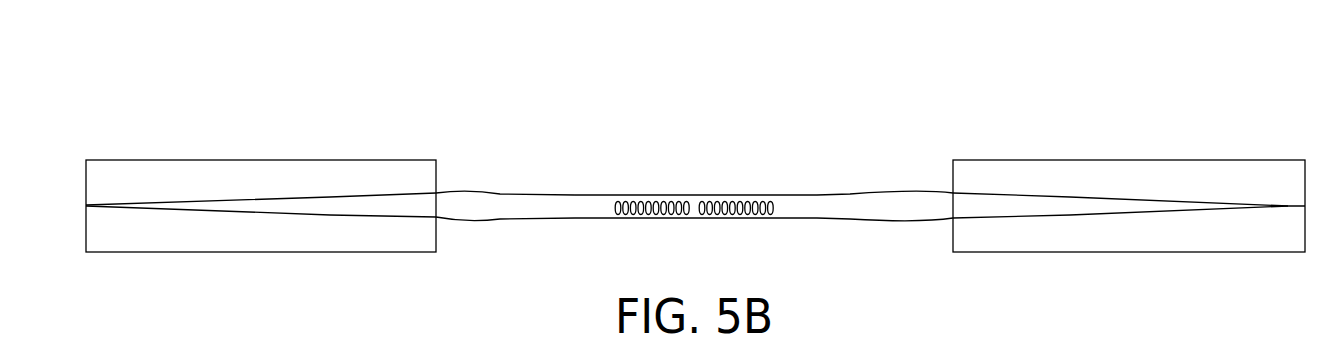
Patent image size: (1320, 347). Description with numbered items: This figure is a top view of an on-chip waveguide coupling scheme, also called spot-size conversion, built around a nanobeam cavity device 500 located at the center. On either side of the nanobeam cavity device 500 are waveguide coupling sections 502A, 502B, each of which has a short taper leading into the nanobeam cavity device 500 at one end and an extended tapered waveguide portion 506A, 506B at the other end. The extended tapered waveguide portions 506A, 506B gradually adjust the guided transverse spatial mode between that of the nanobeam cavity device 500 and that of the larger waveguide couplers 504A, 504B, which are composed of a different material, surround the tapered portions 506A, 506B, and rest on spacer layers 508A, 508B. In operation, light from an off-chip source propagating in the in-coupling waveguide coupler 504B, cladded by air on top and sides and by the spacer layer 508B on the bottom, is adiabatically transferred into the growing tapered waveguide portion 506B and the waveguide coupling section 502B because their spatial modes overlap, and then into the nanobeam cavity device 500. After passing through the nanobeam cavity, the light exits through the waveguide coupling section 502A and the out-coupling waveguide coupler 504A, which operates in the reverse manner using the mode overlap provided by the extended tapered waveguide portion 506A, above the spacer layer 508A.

The nanobeam cavity device 500 is at (695, 170).
The waveguide coupling section 502A is at (465, 202).
The waveguide coupling section 502B is at (907, 205).
The waveguide coupler 504A is at (358, 160).
The waveguide coupler 504B is at (975, 160).
The extended tapered waveguide portion 506A is at (275, 226).
The extended tapered waveguide portion 506B is at (1137, 190).
The spacer layer 508A is at (256, 142).
The spacer layer 508B is at (1070, 138).